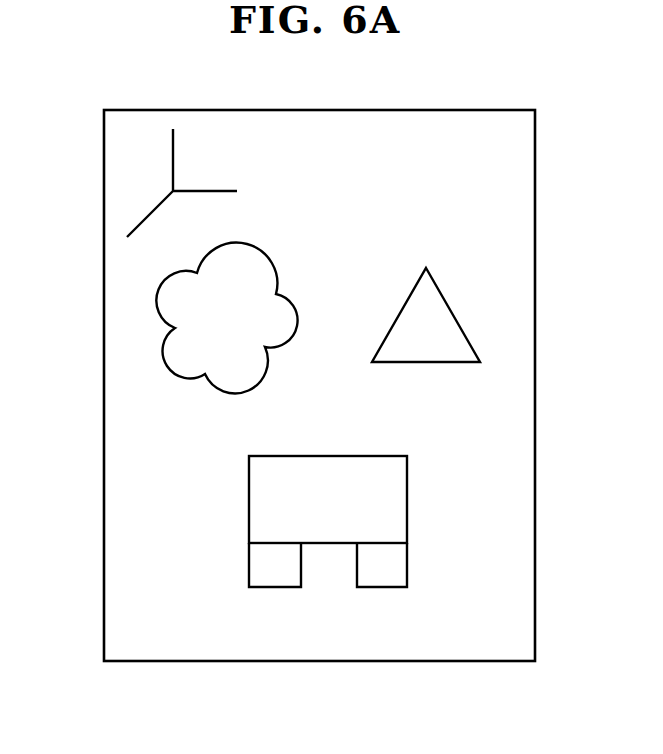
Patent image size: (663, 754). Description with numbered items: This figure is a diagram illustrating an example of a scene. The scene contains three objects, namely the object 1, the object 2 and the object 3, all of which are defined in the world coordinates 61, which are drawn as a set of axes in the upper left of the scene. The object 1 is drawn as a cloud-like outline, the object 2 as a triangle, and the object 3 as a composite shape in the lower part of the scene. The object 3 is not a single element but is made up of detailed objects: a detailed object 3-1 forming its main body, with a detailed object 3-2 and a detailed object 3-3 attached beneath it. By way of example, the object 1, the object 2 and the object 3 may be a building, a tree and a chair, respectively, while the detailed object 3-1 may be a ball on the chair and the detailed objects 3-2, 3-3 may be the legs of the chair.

The world coordinates 61 is at (152, 160).
The object 1 is at (226, 318).
The object 2 is at (426, 315).
The object 3 is at (276, 551).
The detailed object 3-1 is at (328, 499).
The detailed object 3-2 is at (282, 588).
The detailed object 3-3 is at (387, 588).